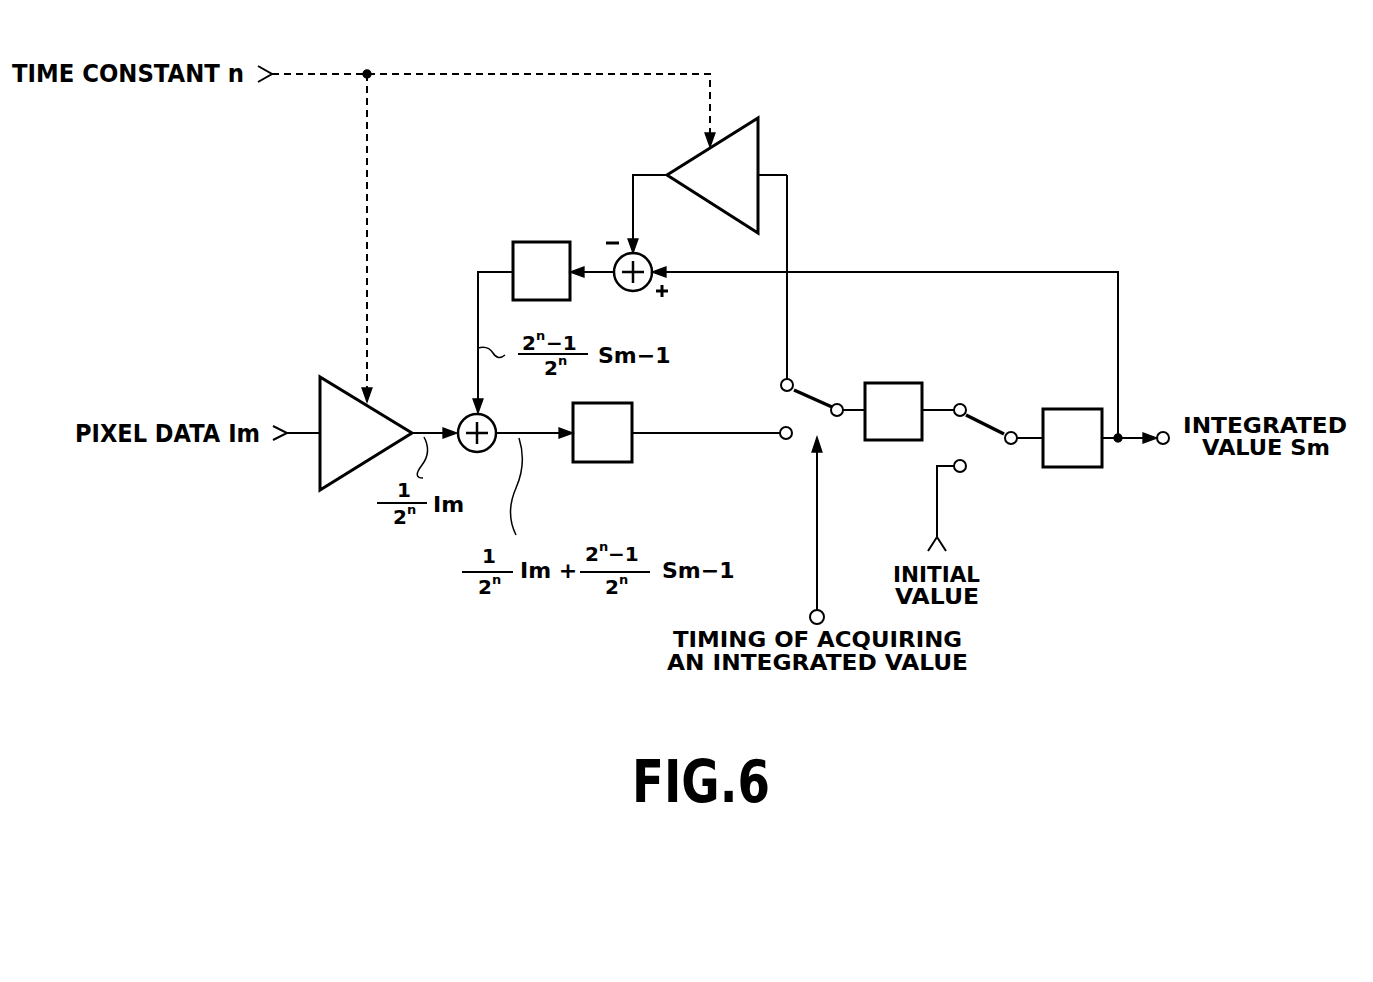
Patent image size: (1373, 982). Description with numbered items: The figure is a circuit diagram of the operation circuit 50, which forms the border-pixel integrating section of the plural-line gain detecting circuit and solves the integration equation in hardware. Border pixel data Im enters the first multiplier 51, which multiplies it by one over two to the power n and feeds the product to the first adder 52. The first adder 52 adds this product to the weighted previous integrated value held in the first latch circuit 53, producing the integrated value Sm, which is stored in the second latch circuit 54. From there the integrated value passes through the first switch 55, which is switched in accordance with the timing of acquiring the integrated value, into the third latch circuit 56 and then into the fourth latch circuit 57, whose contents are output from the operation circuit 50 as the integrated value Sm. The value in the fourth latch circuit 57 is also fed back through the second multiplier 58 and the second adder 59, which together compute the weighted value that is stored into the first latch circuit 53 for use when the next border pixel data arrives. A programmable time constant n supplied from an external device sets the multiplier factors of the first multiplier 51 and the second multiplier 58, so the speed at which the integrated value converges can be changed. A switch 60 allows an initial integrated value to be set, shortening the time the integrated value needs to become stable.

The operation circuit 50 is at (962, 142).
The first multiplier 51 is at (320, 390).
The first adder 52 is at (458, 418).
The first latch circuit 53 is at (537, 241).
The second latch circuit 54 is at (609, 463).
The first switch 55 is at (798, 404).
The third latch circuit 56 is at (892, 383).
The fourth latch circuit 57 is at (1071, 468).
The second multiplier 58 is at (760, 131).
The second adder 59 is at (649, 259).
The switch 60 is at (974, 420).